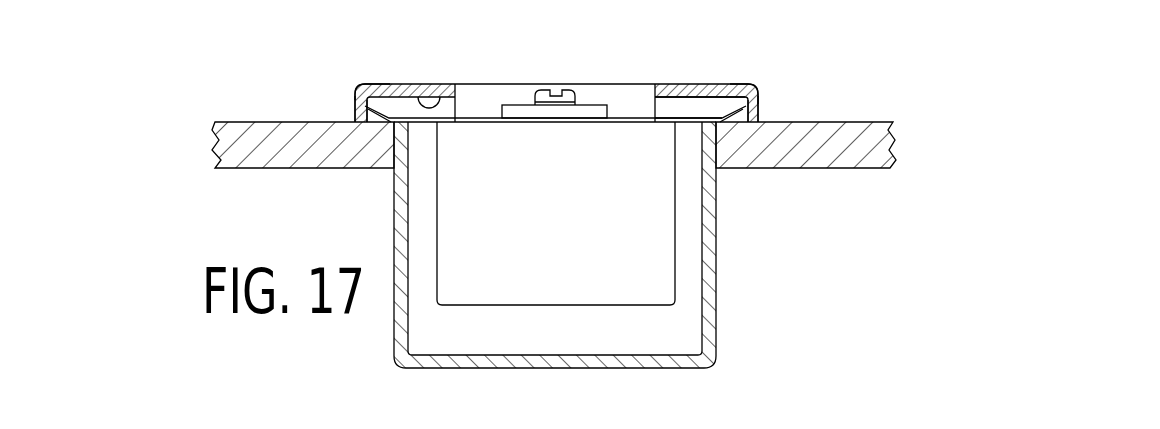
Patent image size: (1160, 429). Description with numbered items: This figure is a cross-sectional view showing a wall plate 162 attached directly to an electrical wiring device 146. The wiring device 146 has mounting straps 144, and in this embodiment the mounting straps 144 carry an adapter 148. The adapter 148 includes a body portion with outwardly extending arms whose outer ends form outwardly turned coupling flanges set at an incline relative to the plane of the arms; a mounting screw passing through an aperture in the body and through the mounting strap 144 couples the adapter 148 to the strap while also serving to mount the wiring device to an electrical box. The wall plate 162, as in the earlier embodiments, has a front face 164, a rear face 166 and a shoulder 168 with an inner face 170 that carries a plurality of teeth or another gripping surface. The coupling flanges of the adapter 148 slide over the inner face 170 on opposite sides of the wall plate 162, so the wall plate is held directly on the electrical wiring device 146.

The mounting strap 144 is at (602, 105).
The electrical wiring device 146 is at (679, 253).
The adapter 148 is at (682, 104).
The wall plate 162 is at (405, 80).
The front face 164 is at (384, 84).
The rear face 166 is at (439, 98).
The shoulder 168 is at (353, 113).
The inner face 170 is at (741, 86).